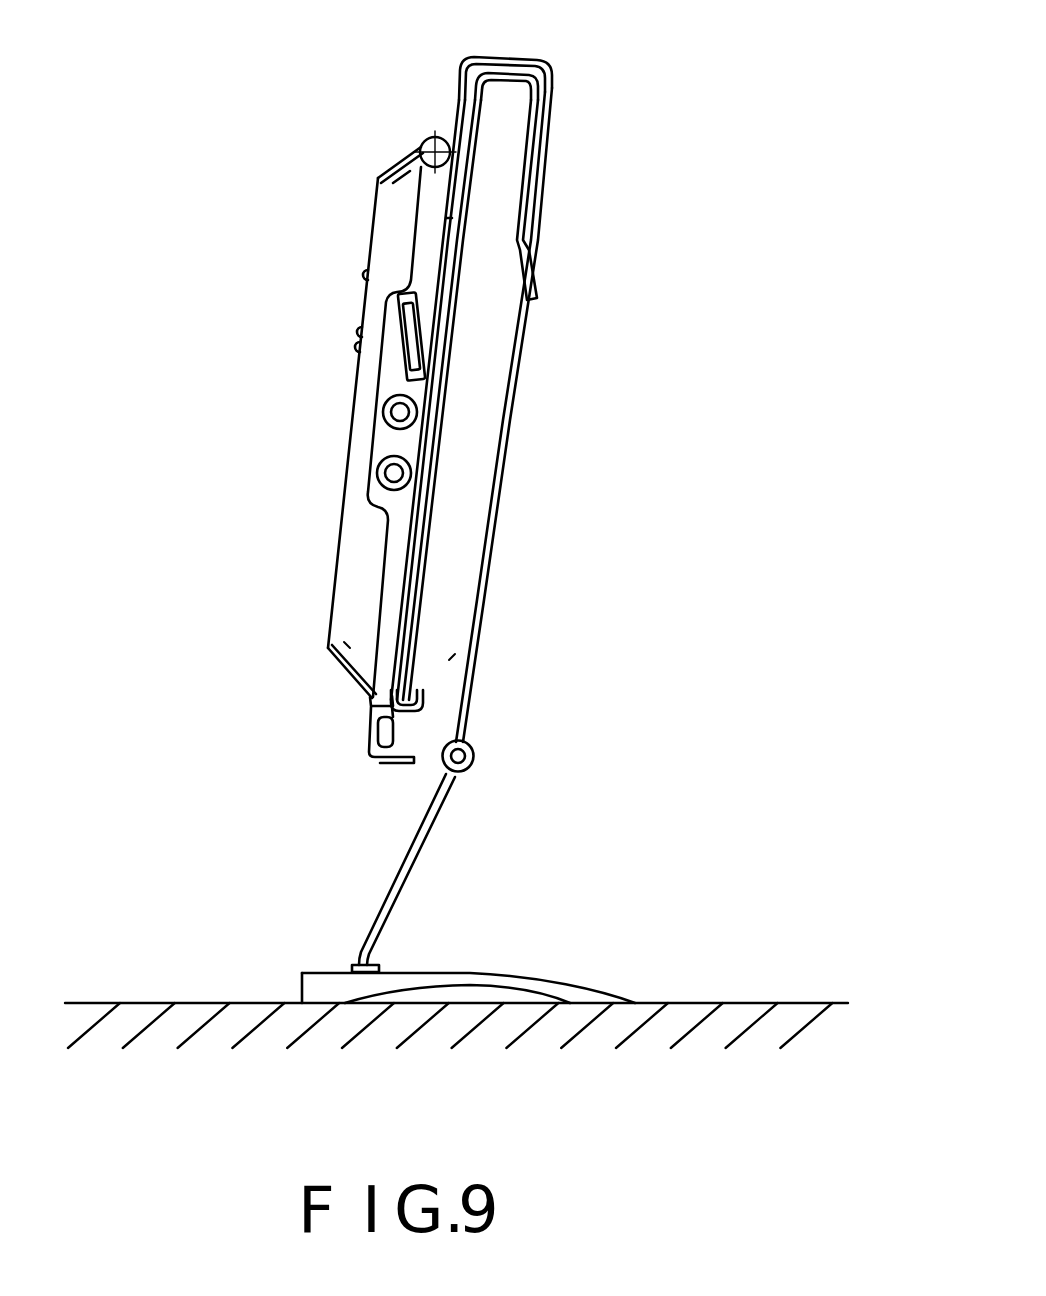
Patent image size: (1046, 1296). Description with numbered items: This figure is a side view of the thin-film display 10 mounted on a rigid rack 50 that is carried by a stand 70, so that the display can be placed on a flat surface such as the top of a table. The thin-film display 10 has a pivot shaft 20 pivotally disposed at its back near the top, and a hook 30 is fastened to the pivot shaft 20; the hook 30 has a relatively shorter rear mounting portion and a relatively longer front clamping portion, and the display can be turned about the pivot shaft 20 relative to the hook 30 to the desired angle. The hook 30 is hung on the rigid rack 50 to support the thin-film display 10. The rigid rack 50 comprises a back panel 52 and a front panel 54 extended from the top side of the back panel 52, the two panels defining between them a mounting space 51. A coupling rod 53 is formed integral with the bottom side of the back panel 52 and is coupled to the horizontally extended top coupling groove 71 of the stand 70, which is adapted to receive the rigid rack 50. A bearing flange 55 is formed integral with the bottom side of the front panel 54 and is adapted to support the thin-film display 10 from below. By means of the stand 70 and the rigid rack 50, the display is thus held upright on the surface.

The thin-film display 10 is at (357, 462).
The pivot shaft 20 is at (430, 137).
The hook 30 is at (550, 78).
The rigid rack 50 is at (507, 500).
The mounting space 51 is at (483, 353).
The back panel 52 is at (502, 422).
The coupling rod 53 is at (464, 748).
The front panel 54 is at (425, 532).
The bearing flange 55 is at (388, 760).
The stand 70 is at (512, 953).
The top coupling groove 71 is at (469, 763).